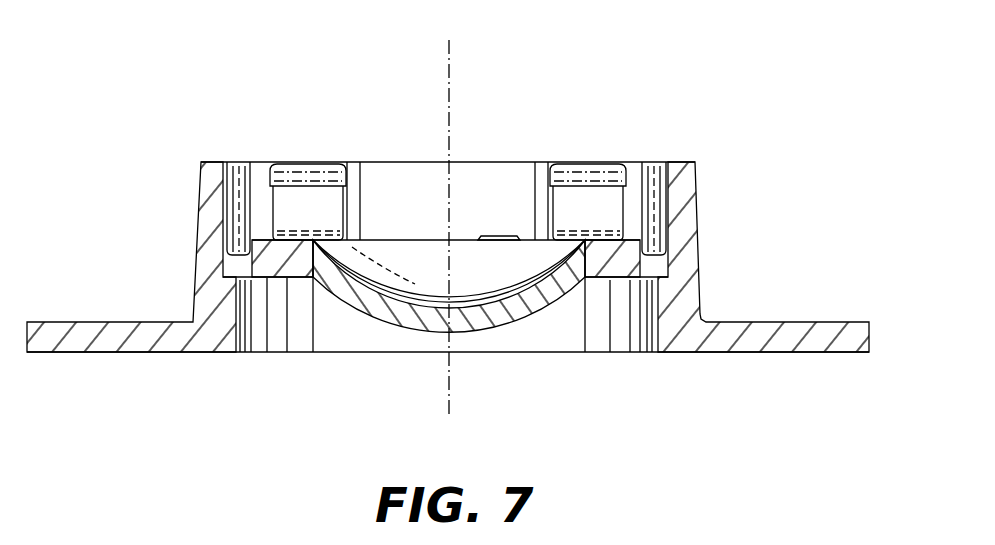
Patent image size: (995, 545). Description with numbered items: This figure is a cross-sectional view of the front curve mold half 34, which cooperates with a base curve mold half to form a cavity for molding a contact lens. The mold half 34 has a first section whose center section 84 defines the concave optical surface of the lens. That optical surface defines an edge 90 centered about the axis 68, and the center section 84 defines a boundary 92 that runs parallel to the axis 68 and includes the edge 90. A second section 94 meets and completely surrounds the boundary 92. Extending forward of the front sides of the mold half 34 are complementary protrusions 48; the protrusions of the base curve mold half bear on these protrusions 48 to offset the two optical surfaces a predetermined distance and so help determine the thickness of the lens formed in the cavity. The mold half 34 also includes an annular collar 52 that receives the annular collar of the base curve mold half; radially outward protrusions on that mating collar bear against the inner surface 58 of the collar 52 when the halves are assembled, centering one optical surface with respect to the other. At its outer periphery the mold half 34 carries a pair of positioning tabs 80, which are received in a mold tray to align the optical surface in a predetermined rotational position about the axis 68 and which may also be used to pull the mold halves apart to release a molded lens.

The mold half 34 is at (448, 253).
The protrusions 48 is at (499, 236).
The annular collar 52 is at (196, 246).
The inner surface 58 is at (414, 182).
The axis 68 is at (449, 88).
The positioning tabs 80 is at (113, 352).
The center section 84 is at (352, 305).
The edge 90 is at (583, 250).
The boundary 92 is at (582, 255).
The second section 94 is at (215, 352).